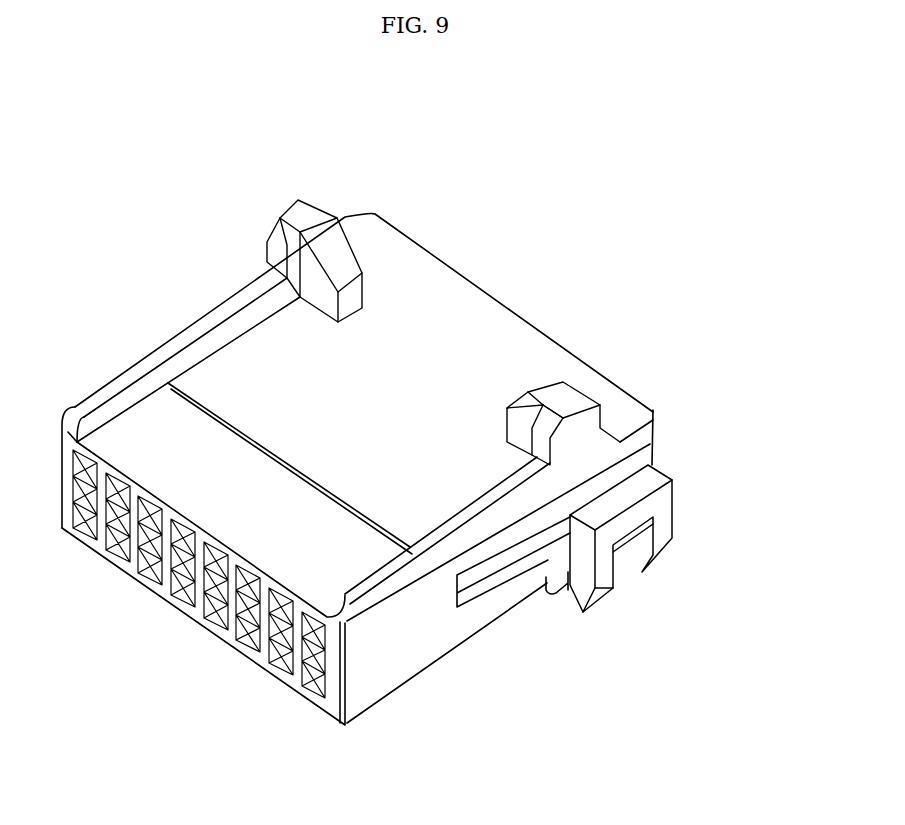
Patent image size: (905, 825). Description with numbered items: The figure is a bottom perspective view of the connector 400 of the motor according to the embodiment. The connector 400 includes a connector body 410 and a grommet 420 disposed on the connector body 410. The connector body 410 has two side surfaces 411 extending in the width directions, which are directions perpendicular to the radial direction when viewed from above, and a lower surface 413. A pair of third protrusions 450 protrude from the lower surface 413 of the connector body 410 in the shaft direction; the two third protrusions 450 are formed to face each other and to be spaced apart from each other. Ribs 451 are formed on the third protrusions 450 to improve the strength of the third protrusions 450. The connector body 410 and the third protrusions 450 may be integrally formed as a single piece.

The connector 400 is at (68, 99).
The connector body 410 is at (139, 606).
The side surface 411 is at (418, 656).
The lower surface 413 is at (462, 327).
The grommet 420 is at (688, 505).
The third protrusion 450 is at (300, 208).
The rib 451 is at (347, 268).